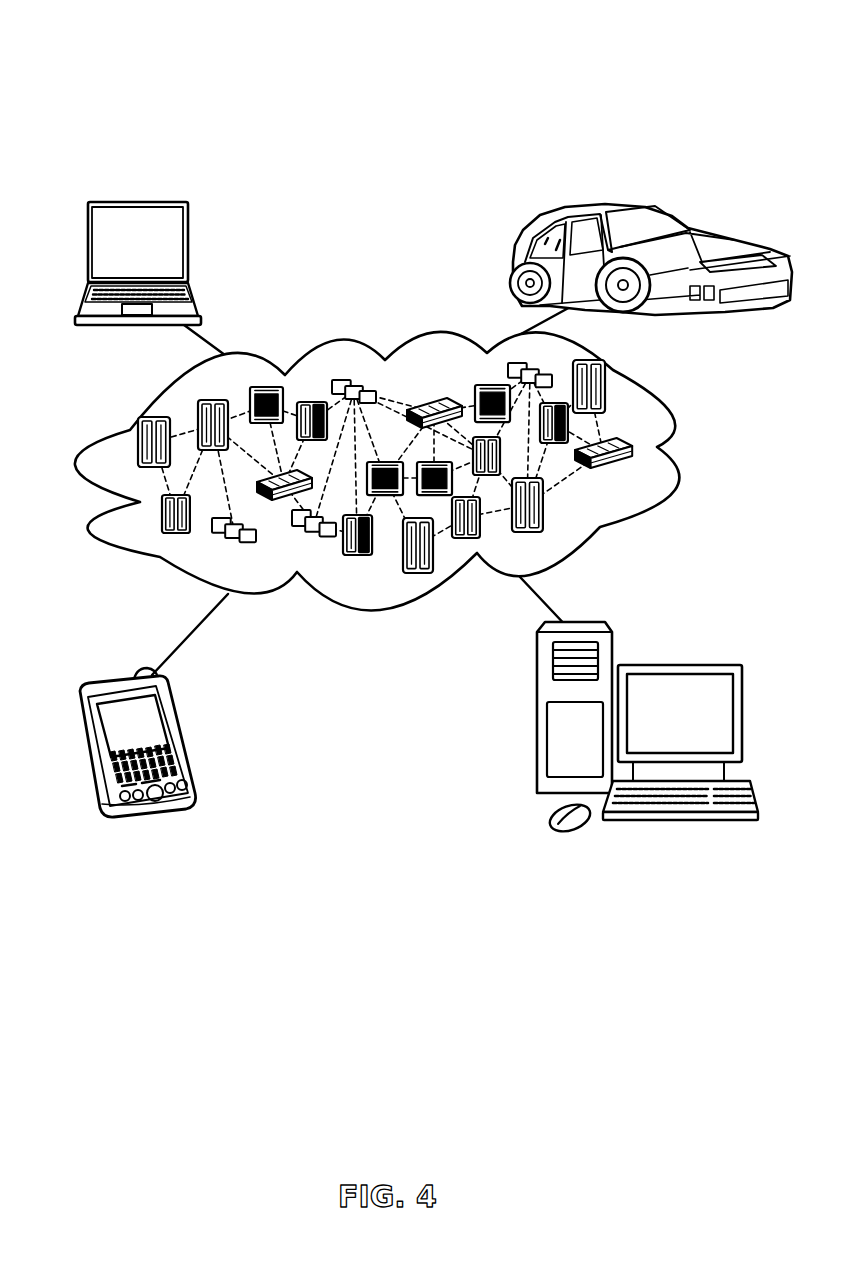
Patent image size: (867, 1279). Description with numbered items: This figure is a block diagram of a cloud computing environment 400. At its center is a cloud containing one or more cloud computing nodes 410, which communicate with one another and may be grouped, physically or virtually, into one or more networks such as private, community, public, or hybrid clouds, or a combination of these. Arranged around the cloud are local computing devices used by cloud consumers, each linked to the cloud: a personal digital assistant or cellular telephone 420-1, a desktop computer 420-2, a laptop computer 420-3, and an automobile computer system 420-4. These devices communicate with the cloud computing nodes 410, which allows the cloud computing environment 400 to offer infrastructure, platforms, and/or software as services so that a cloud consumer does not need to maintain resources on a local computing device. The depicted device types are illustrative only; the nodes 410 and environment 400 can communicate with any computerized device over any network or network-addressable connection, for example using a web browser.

The cloud computing environment 400 is at (316, 54).
The cloud computing nodes 410 is at (645, 476).
The personal digital assistant (PDA) or cellular telephone 420-1 is at (185, 737).
The desktop computer 420-2 is at (678, 662).
The laptop computer 420-3 is at (190, 246).
The automobile computer system 420-4 is at (514, 261).